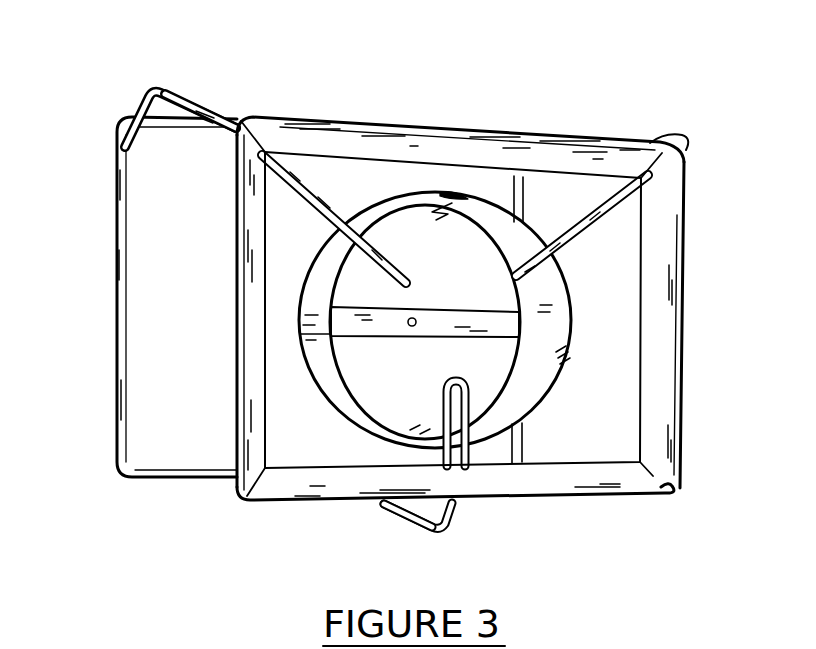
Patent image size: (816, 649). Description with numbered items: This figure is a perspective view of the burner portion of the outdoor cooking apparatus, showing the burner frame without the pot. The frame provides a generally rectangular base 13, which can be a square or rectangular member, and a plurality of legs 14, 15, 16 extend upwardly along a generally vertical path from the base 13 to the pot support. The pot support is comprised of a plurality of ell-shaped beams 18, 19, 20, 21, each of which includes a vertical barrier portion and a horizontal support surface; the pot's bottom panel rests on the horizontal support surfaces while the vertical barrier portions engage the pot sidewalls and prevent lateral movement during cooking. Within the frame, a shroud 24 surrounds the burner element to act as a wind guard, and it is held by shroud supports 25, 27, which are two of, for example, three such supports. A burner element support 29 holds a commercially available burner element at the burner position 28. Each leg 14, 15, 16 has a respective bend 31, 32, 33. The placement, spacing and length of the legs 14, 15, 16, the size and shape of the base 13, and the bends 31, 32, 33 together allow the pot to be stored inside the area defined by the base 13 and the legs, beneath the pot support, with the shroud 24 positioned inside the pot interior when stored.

The base 13 is at (113, 417).
The leg 14 is at (467, 311).
The leg 15 is at (411, 508).
The leg 16 is at (138, 103).
The ell-shaped beam 18 is at (506, 133).
The ell-shaped beam 19 is at (684, 350).
The ell-shaped beam 20 is at (547, 500).
The ell-shaped beam 21 is at (233, 380).
The shroud 24 is at (404, 268).
The shroud support 25 is at (451, 379).
The shroud support 27 is at (523, 237).
The burner position 28 is at (411, 327).
The burner element support 29 is at (480, 316).
The bend 31 is at (692, 135).
The bend 32 is at (443, 517).
The bend 33 is at (168, 92).